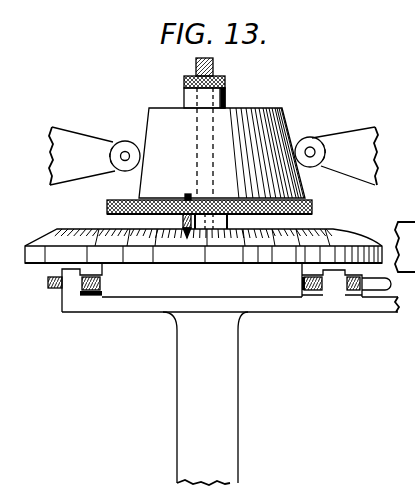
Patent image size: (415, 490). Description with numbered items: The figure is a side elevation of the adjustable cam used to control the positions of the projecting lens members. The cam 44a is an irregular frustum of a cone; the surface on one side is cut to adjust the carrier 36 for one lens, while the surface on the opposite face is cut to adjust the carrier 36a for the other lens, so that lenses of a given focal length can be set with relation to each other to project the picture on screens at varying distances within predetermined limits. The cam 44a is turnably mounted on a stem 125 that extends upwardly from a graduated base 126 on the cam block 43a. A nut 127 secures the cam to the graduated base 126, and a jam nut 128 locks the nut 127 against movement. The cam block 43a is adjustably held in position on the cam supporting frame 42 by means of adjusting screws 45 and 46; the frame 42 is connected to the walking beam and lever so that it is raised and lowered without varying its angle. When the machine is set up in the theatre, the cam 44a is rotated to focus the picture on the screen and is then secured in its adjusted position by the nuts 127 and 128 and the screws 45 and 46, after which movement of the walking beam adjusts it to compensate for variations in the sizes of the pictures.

The stem 125 is at (196, 66).
The jam nut 128 is at (225, 80).
The nut 127 is at (225, 98).
The cam 44a is at (285, 107).
The carrier 36 is at (368, 125).
The carrier 36a is at (82, 140).
The graduated base 126 is at (48, 238).
The cam block 43a is at (163, 283).
The adjusting screw 45 is at (50, 288).
The adjusting screw 46 is at (378, 283).
The cam supporting frame 42 is at (233, 387).